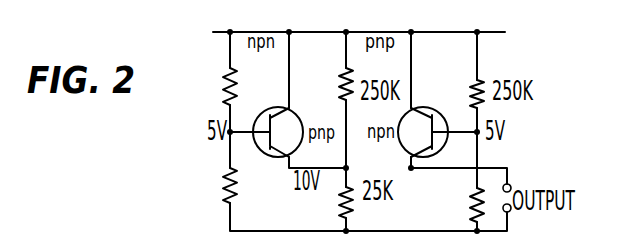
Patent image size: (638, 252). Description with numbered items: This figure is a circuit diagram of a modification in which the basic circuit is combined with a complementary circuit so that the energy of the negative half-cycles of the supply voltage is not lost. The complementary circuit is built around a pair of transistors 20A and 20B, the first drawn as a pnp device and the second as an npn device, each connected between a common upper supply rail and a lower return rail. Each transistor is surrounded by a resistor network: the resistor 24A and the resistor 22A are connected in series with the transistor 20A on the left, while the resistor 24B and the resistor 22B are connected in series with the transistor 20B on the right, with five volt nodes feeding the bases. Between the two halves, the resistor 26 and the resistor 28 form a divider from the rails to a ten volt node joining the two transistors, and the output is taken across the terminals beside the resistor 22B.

The transistor 20A is at (277, 118).
The transistor 20B is at (424, 117).
The resistor 22A is at (227, 195).
The resistor 22B is at (473, 204).
The resistor 24A is at (226, 80).
The resistor 24B is at (475, 80).
The 250K resistor 26 is at (342, 83).
The 25K resistor 28 is at (342, 205).